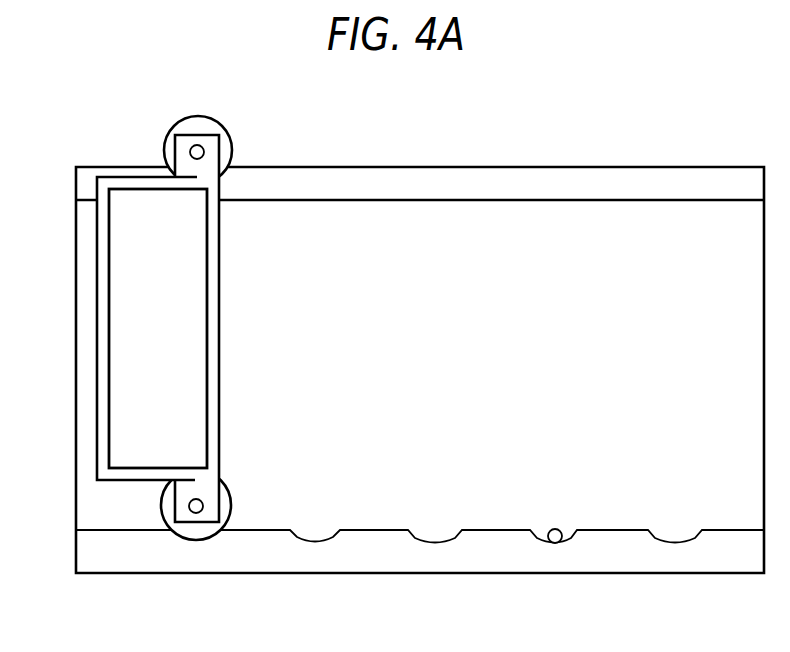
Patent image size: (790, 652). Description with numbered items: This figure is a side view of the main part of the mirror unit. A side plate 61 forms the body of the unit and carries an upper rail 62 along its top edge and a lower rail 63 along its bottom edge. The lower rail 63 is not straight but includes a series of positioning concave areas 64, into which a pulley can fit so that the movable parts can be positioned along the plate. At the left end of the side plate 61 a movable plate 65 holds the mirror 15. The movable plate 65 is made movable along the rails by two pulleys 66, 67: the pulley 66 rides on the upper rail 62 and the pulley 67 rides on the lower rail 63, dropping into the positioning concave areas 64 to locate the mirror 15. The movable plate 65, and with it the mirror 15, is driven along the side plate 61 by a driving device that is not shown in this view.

The mirror 15 is at (124, 272).
The side plate 61 is at (595, 224).
The upper rail 62 is at (436, 167).
The lower rail 63 is at (487, 553).
The positioning concave areas 64 is at (563, 538).
The movable plate 65 is at (97, 425).
The pulley 66 is at (226, 142).
The pulley 67 is at (197, 541).